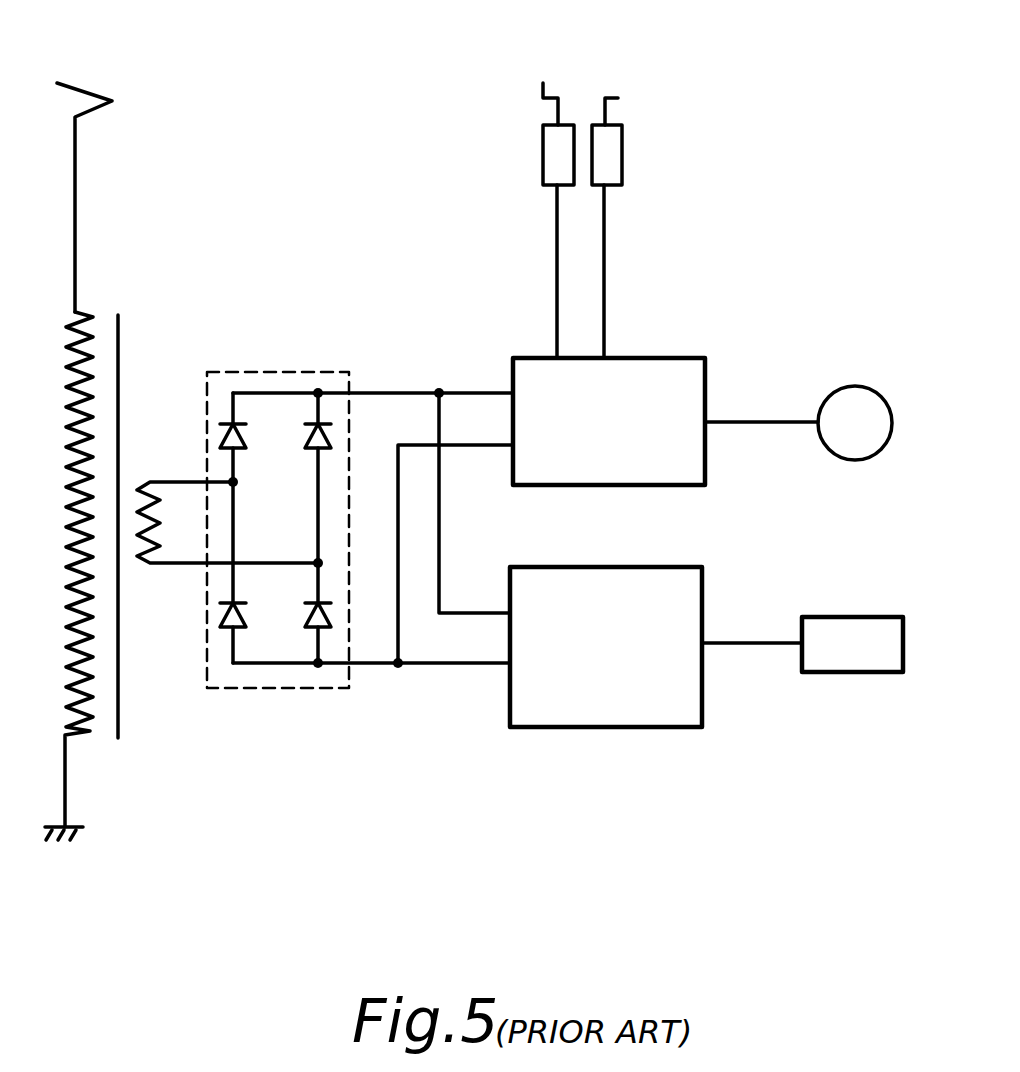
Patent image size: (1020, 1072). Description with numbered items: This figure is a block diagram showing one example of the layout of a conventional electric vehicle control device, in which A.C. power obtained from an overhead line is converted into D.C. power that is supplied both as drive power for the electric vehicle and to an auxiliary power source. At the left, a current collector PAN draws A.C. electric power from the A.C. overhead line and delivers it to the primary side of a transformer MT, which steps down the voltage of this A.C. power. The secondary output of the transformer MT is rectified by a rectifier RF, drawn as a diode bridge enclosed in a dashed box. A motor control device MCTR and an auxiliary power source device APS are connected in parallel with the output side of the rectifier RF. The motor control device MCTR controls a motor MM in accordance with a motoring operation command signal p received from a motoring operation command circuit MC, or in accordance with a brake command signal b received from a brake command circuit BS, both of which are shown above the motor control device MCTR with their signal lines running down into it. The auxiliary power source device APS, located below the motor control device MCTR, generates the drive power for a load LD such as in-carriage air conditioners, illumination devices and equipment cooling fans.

The current collector PAN is at (73, 83).
The transformer MT is at (120, 325).
The rectifier RF is at (320, 372).
The motoring operation command circuit MC is at (543, 160).
The brake command circuit BS is at (623, 150).
The motoring operation command signal p is at (538, 247).
The brake command signal b is at (621, 247).
The motor control device MCTR is at (667, 358).
The motor MM is at (798, 423).
The auxiliary power source device APS is at (668, 567).
The load LD is at (802, 644).